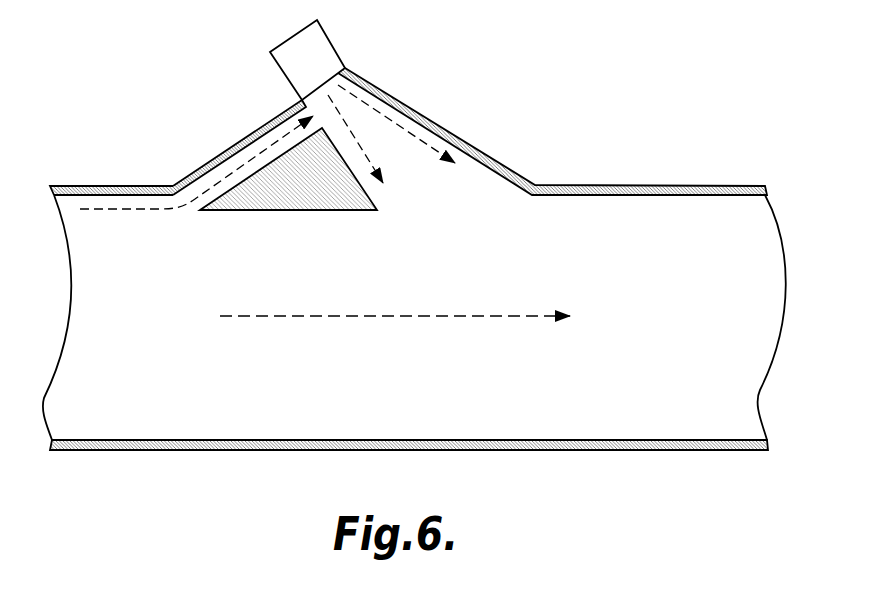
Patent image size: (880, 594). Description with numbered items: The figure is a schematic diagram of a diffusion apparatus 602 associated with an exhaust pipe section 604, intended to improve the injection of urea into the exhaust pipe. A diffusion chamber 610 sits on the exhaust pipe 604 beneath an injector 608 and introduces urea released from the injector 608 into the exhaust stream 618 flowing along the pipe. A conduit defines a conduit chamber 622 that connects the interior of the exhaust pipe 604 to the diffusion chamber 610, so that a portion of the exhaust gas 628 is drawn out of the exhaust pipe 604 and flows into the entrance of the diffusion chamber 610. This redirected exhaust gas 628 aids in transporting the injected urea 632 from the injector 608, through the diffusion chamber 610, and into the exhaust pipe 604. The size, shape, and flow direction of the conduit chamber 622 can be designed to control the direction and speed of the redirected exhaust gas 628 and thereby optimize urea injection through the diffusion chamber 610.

The diffusion apparatus 602 is at (486, 57).
The exhaust pipe section 604 is at (113, 186).
The injector 608 is at (330, 42).
The diffusion chamber 610 is at (430, 188).
The exhaust stream 618 is at (340, 318).
The conduit chamber 622 is at (222, 165).
The exhaust gas 628 is at (165, 212).
The injected urea 632 is at (343, 117).